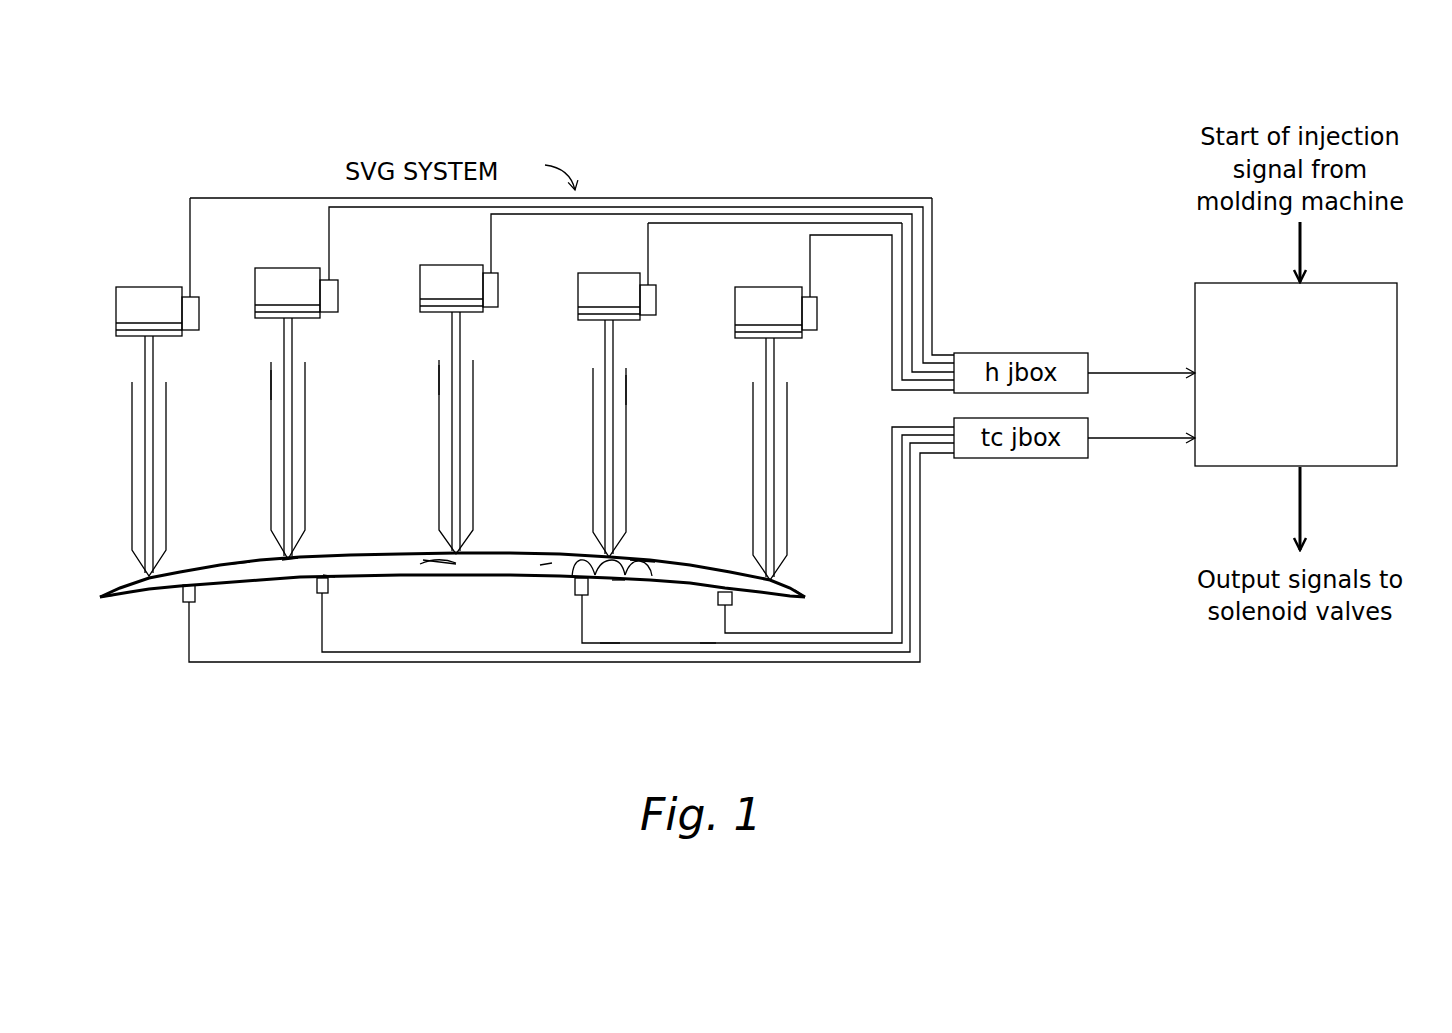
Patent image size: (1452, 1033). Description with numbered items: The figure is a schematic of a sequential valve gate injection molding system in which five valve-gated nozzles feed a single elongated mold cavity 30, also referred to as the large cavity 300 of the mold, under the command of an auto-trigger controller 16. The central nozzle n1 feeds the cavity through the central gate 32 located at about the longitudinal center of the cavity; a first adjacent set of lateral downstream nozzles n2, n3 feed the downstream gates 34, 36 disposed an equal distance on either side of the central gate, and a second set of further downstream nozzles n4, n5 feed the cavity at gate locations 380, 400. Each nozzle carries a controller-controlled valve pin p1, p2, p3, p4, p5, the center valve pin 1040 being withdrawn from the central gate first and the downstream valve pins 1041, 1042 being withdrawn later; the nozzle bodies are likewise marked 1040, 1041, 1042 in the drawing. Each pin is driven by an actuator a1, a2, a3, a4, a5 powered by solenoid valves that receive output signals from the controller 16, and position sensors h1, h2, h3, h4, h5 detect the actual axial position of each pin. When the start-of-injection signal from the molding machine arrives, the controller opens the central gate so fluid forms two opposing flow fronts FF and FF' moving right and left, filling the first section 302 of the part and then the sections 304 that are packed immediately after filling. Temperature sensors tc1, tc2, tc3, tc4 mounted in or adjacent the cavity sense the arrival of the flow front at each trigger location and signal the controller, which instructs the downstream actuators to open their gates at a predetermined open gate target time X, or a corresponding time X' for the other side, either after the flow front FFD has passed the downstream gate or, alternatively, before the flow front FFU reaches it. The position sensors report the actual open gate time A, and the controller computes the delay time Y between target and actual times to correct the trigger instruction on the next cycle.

The actuator a1 is at (450, 265).
The actuator a2 is at (606, 273).
The actuator a3 is at (286, 268).
The actuator a4 is at (762, 287).
The actuator a5 is at (147, 287).
The position sensor h1 is at (499, 273).
The position sensor h2 is at (659, 285).
The position sensor h3 is at (340, 280).
The position sensor h4 is at (818, 300).
The position sensor h5 is at (200, 303).
The valve pin p1 is at (452, 333).
The valve pin p2 is at (605, 347).
The valve pin p3 is at (284, 343).
The valve pin p4 is at (766, 362).
The valve pin p5 is at (145, 360).
The nozzle n1 is at (473, 470).
The nozzle n2 is at (627, 486).
The nozzle n3 is at (305, 488).
The nozzle n4 is at (787, 508).
The nozzle n5 is at (167, 507).
The temperature sensor tc1 is at (590, 588).
The temperature sensor tc2 is at (329, 588).
The temperature sensor tc3 is at (733, 598).
The temperature sensor tc4 is at (196, 593).
The center valve pin 1040 is at (439, 375).
The valve pin 1041 is at (614, 392).
The valve pin 1042 is at (271, 385).
The mold cavity 30 is at (393, 553).
The cavity 300 is at (543, 566).
The first section of the part 302 is at (475, 566).
The section of the part 304 is at (246, 573).
The central gate 32 is at (455, 564).
The downstream gate 34 is at (618, 583).
The downstream gate 36 is at (290, 560).
The gate location 380 is at (792, 600).
The gate location 400 is at (148, 578).
The controller 16 is at (1392, 285).
The flow front FF is at (556, 596).
The flow front FFU is at (580, 562).
The flow front FFD is at (643, 570).
The flow front FF' is at (332, 532).
The open gate target time X is at (600, 681).
The position X' is at (718, 680).
The actual open gate time A is at (343, 205).
The delay time Y is at (745, 158).